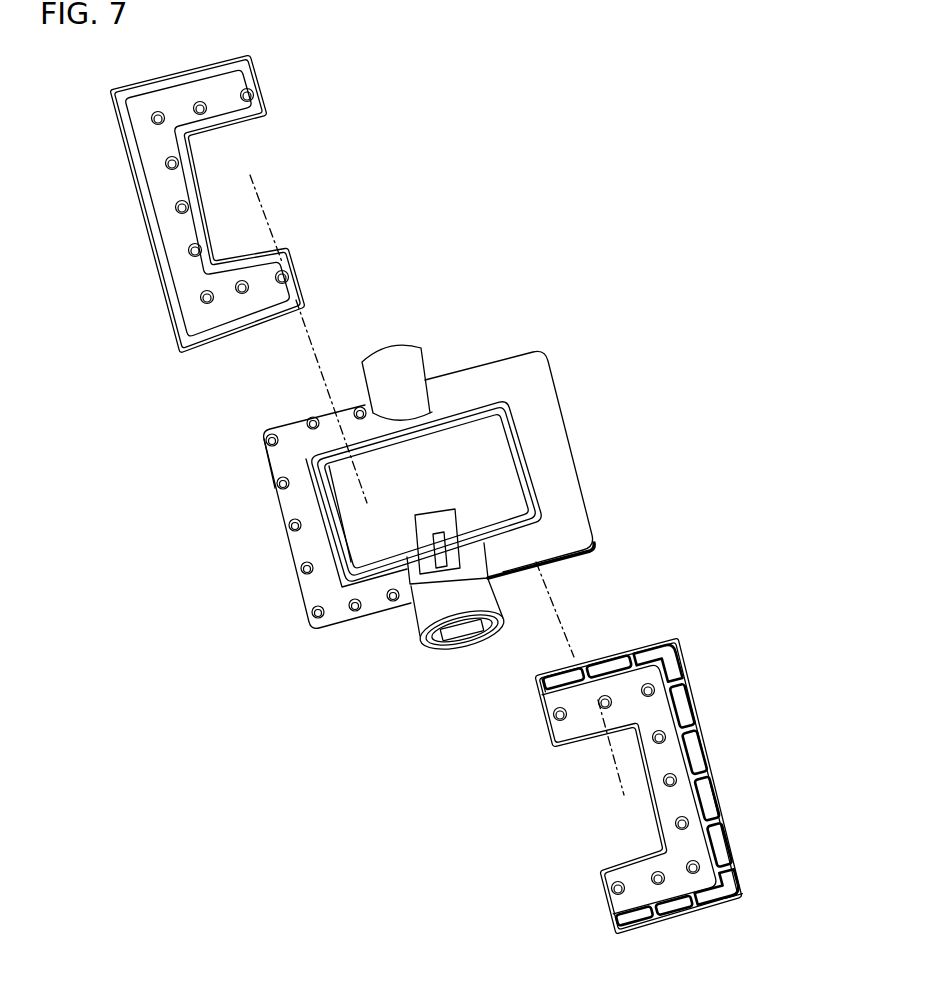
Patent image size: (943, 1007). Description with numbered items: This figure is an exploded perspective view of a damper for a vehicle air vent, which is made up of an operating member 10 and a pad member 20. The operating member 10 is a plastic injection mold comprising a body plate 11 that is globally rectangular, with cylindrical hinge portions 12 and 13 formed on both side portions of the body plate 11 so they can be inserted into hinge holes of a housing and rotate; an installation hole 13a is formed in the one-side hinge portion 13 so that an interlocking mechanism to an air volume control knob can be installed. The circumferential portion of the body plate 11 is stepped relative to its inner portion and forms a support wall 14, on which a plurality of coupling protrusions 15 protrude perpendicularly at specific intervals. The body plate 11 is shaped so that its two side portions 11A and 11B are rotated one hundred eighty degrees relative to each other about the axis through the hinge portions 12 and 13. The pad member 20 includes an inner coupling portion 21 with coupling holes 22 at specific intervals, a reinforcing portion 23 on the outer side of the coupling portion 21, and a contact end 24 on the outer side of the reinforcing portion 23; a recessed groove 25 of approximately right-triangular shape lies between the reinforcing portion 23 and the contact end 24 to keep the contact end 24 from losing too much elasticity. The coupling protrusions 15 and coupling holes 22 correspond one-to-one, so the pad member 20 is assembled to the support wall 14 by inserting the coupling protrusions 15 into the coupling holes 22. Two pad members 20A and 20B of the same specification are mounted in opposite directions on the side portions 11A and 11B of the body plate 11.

The operating member 10 is at (541, 393).
The body plate 11 is at (477, 494).
The side portion 11A is at (426, 491).
The side portion 11B is at (364, 514).
The hinge portion 12 is at (397, 349).
The hinge portion 13 is at (429, 644).
The installation hole 13a is at (449, 620).
The support wall 14 is at (449, 517).
The coupling protrusion 15 is at (457, 510).
The pad member 20 is at (670, 729).
The pad member 20A is at (642, 809).
The pad member 20B is at (208, 235).
The coupling portion 21 is at (372, 514).
The coupling hole 22 is at (390, 492).
The reinforcing portion 23 is at (405, 493).
The contact end 24 is at (433, 494).
The recessed groove 25 is at (669, 785).